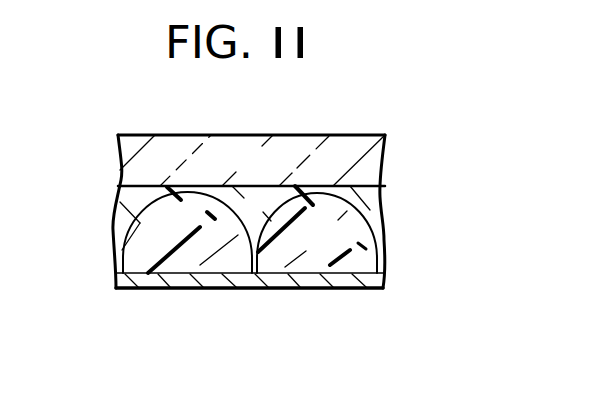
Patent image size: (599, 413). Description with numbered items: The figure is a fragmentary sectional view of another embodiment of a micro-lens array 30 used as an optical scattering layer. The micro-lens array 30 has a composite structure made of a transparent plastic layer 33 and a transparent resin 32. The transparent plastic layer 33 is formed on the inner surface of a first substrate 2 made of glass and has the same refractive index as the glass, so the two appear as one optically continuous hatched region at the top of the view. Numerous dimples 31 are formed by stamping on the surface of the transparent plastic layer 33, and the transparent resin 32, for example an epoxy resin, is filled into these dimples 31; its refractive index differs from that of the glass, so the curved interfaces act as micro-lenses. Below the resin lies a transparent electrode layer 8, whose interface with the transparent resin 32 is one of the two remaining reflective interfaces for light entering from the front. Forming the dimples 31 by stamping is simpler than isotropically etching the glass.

The first substrate 2 is at (375, 163).
The micro-lens array 30 is at (102, 185).
The dimples 31 is at (186, 204).
The transparent resin 32 is at (300, 268).
The transparent plastic layer 33 is at (368, 212).
The transparent electrode layer 8 is at (373, 282).